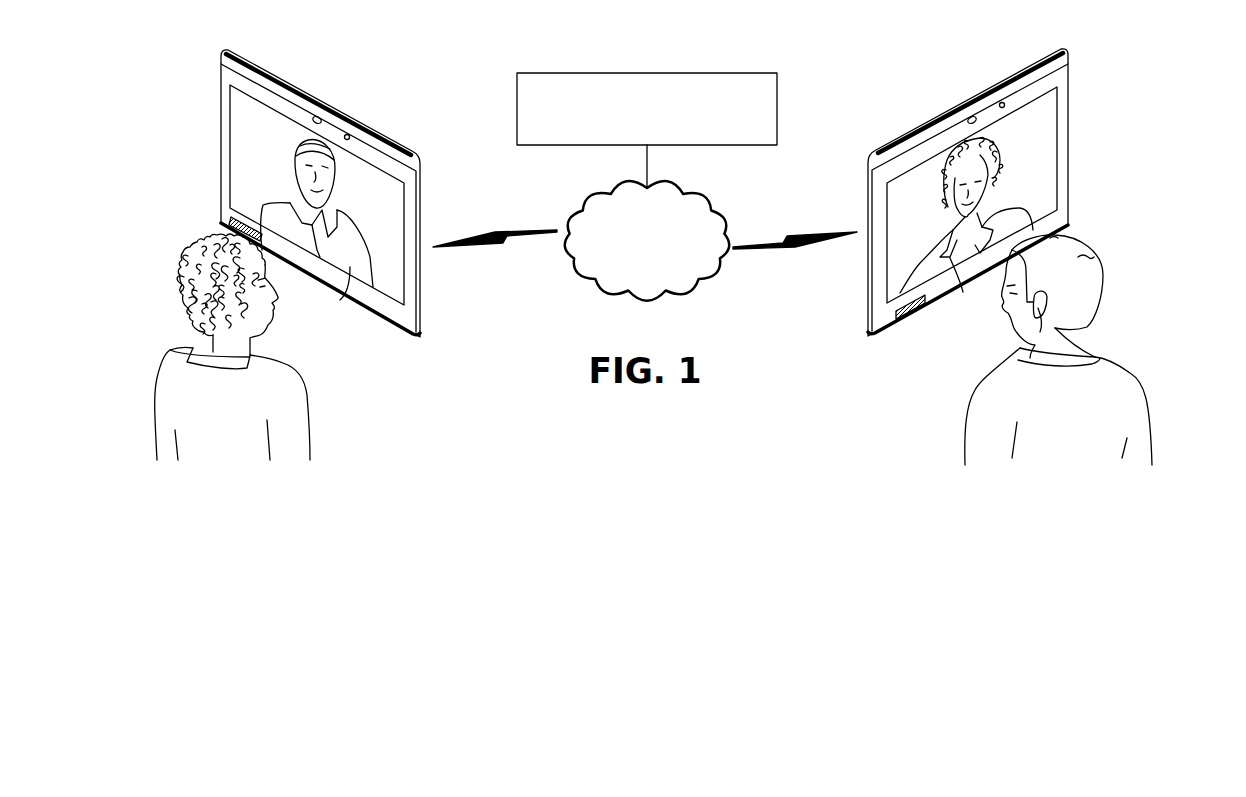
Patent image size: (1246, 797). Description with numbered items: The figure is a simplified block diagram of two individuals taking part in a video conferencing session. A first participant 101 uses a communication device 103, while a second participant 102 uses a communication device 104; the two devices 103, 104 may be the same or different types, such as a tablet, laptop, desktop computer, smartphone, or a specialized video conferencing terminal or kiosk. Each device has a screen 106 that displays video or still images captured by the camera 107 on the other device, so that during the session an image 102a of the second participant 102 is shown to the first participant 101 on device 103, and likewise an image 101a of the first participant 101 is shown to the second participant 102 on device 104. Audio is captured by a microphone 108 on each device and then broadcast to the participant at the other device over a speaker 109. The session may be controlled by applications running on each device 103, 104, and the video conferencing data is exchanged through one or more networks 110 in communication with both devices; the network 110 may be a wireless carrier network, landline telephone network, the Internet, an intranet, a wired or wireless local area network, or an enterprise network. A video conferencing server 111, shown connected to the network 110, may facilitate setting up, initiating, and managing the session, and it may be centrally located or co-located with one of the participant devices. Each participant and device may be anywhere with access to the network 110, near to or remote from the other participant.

The participant 101 is at (158, 397).
The participant 102 is at (1150, 398).
The image of participant 101 101a is at (943, 275).
The image of participant 102 102a is at (360, 268).
The communication device 103 is at (216, 133).
The communication device 104 is at (1074, 133).
The screen 106 is at (397, 203).
The camera 107 is at (313, 117).
The microphone 108 is at (348, 134).
The speaker 109 is at (236, 230).
The network 110 is at (669, 250).
The video conferencing server 111 is at (633, 73).